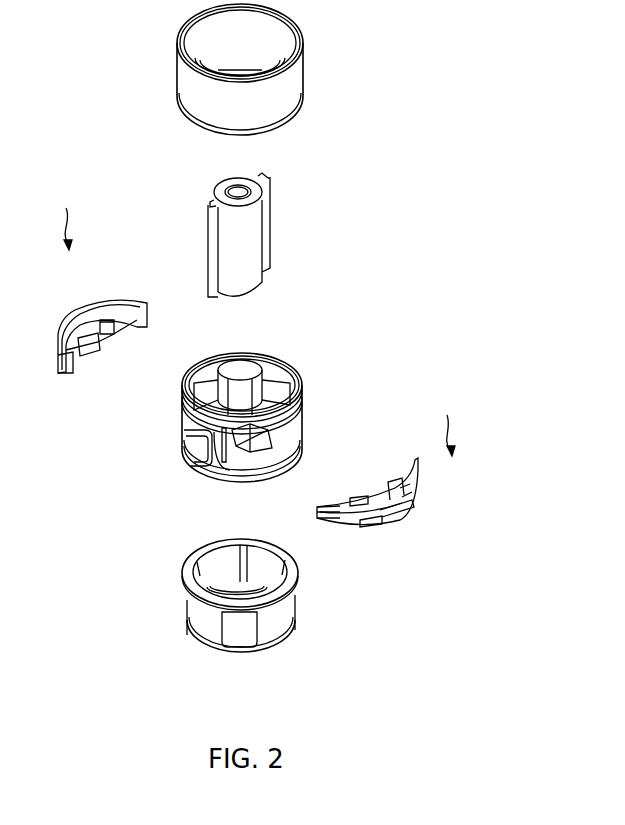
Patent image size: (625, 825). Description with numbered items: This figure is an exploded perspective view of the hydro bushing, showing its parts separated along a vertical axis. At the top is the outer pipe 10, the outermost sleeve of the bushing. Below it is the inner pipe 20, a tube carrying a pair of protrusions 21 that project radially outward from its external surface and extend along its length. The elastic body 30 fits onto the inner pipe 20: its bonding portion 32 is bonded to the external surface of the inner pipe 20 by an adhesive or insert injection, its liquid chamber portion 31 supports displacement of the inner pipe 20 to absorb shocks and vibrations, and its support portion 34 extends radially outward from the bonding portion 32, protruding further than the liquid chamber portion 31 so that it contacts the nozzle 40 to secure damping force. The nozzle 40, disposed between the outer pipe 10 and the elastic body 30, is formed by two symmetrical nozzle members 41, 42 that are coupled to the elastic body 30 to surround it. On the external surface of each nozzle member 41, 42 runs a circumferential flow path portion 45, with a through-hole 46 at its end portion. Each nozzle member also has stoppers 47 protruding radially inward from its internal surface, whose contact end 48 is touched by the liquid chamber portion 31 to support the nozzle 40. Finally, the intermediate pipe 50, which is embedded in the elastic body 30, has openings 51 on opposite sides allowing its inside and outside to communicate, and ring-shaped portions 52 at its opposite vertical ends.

The outer pipe 10 is at (293, 80).
The inner pipe 20 is at (264, 232).
The pair of protrusions 21 is at (263, 177).
The elastic body 30 is at (262, 419).
The liquid chamber portion 31 is at (243, 452).
The bonding portion 32 is at (228, 372).
The support portion 34 is at (277, 443).
The nozzle 40 is at (255, 322).
The nozzle member 41 is at (102, 320).
The nozzle member 42 is at (391, 509).
The flow path portion 45 is at (64, 378).
The through-hole 46 is at (375, 528).
The stopper 47 is at (80, 350).
The contact end 48 is at (108, 336).
The intermediate pipe 50 is at (247, 610).
The openings 51 is at (258, 620).
The ring-shaped portions 52 is at (183, 633).